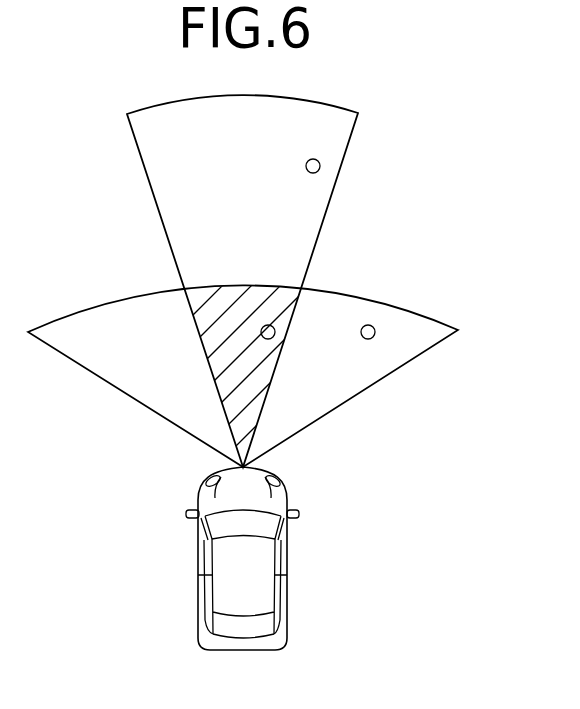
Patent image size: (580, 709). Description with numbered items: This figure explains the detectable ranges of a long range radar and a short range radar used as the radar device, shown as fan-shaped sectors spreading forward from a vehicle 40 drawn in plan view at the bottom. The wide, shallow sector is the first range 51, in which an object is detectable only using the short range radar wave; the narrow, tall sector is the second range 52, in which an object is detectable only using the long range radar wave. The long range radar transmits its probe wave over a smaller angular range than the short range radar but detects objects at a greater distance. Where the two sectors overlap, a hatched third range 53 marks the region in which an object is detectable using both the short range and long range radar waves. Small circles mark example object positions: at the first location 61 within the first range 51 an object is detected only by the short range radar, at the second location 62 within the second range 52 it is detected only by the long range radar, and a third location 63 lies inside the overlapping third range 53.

The vehicle 40 is at (287, 576).
The first range 51 is at (443, 342).
The second range 52 is at (357, 130).
The third range 53 is at (286, 295).
The first location 61 is at (372, 339).
The second location 62 is at (320, 169).
The object detected in overlapping area 63 is at (275, 333).